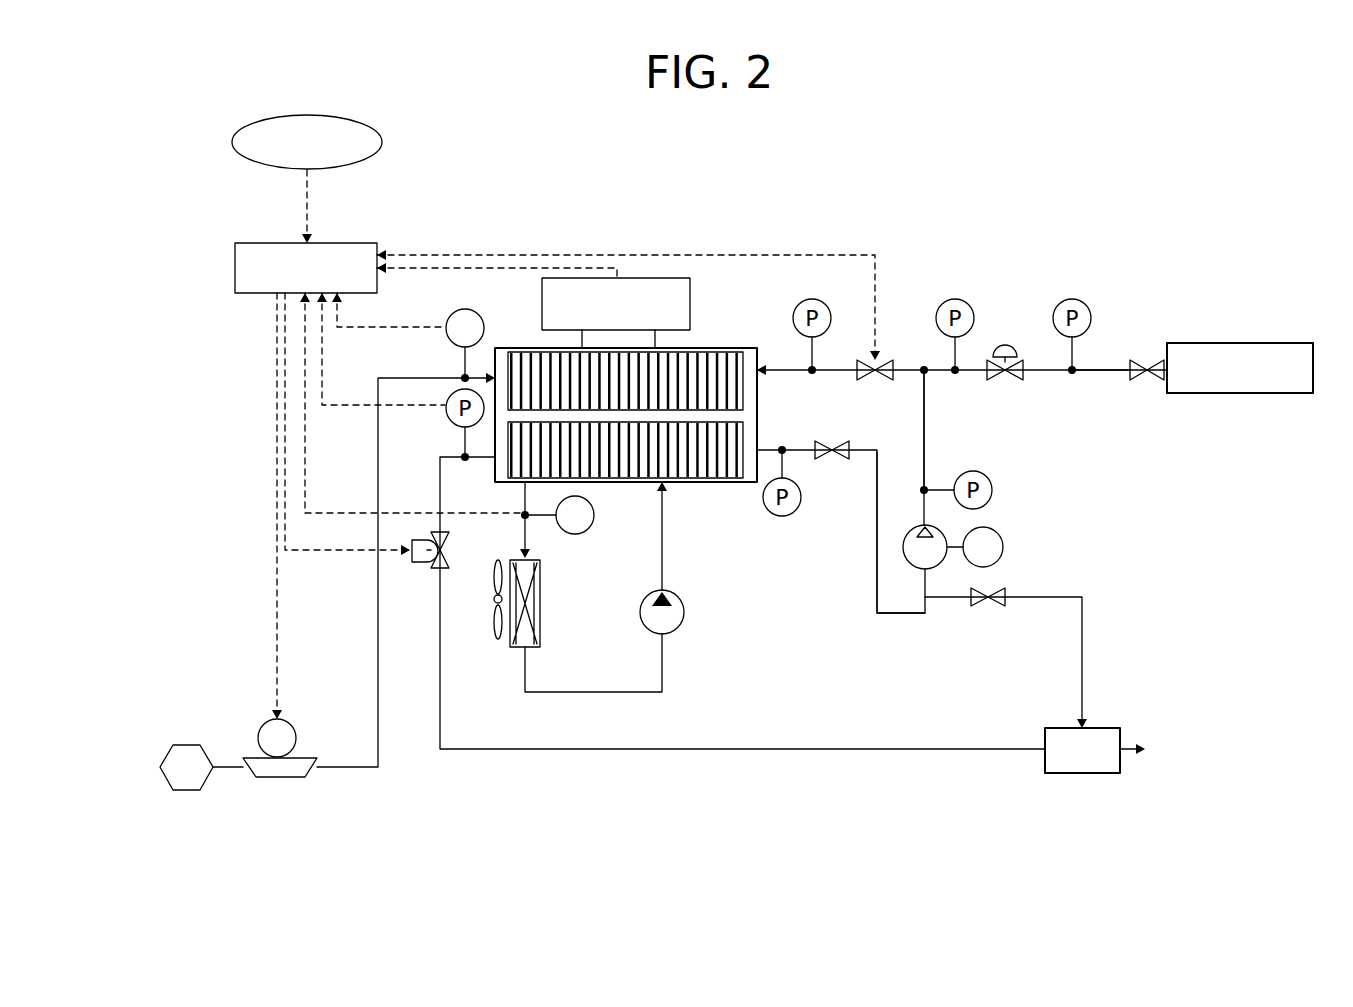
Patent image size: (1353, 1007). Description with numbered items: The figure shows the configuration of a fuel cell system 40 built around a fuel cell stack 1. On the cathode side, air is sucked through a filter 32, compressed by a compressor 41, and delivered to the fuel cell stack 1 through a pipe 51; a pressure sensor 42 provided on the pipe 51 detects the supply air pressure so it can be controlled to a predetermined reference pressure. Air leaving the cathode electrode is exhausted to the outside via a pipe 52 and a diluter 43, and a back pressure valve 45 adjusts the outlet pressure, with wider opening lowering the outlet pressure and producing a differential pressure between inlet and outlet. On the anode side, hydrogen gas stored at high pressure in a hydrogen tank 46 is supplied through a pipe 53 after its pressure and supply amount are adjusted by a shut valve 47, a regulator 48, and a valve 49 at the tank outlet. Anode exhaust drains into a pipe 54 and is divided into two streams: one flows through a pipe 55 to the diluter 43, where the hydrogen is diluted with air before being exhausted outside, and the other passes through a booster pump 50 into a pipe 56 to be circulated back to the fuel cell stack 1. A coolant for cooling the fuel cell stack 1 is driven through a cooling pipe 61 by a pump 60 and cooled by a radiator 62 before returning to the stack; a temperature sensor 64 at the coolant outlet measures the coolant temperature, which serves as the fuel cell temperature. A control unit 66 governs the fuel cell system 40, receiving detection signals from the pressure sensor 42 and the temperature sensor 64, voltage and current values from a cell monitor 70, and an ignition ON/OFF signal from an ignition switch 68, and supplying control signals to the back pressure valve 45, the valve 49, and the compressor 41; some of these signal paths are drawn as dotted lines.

The fuel cell stack 1 is at (712, 348).
The filter 32 is at (160, 767).
The fuel cell system 40 is at (845, 175).
The compressor 41 is at (262, 725).
The pressure sensor 42 is at (465, 308).
The diluter 43 is at (1088, 775).
The back pressure valve 45 is at (420, 565).
The hydrogen tank 46 is at (1258, 343).
The shut valve 47 is at (1150, 360).
The regulator 48 is at (1010, 345).
The valve 49 is at (878, 360).
The booster pump 50 is at (1005, 540).
The pipe 51 is at (355, 770).
The pipe 52 is at (558, 752).
The pipe 53 is at (1102, 372).
The pipe 54 is at (877, 612).
The pipe 55 is at (1085, 612).
The pipe 56 is at (925, 413).
The pump 60 is at (684, 612).
The cooling pipe 61 is at (665, 672).
The radiator 62 is at (540, 648).
The temperature sensor 64 is at (575, 537).
The control unit 66 is at (235, 262).
The ignition switch 68 is at (232, 145).
The cell monitor 70 is at (656, 278).